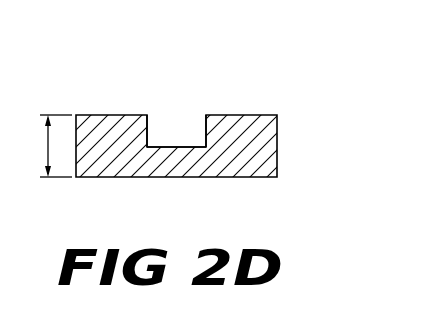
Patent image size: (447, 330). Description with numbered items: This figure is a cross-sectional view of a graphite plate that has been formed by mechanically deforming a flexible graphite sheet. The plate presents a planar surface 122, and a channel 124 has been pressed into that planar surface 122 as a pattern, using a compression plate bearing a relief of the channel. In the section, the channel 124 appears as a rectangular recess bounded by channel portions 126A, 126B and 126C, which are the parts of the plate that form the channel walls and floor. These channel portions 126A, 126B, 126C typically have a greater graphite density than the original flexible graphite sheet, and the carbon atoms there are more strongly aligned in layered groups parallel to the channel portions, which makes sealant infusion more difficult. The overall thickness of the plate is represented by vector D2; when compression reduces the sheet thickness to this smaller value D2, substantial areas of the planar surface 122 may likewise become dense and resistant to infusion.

The planar surface 122 is at (265, 114).
The channel 124 is at (177, 98).
The channel portion 126A is at (197, 116).
The channel portion 126B is at (147, 114).
The channel portion 126C is at (165, 147).
The vector D2 is at (42, 146).